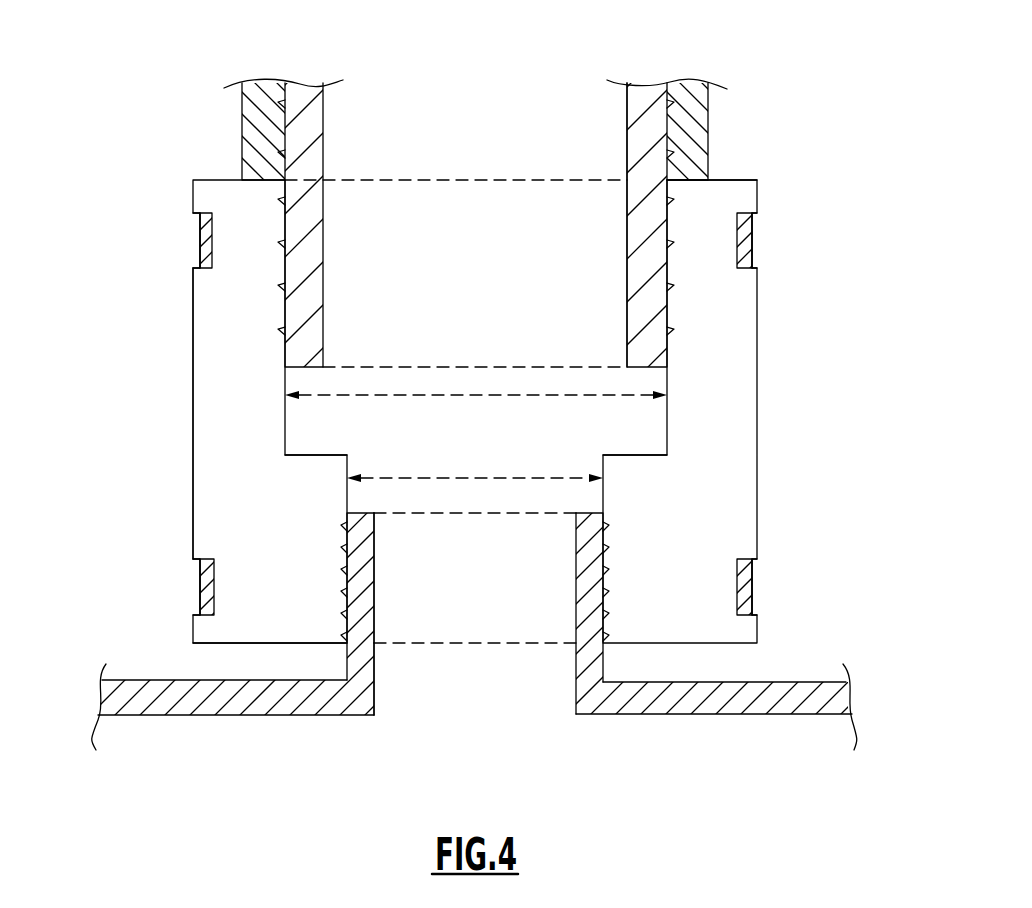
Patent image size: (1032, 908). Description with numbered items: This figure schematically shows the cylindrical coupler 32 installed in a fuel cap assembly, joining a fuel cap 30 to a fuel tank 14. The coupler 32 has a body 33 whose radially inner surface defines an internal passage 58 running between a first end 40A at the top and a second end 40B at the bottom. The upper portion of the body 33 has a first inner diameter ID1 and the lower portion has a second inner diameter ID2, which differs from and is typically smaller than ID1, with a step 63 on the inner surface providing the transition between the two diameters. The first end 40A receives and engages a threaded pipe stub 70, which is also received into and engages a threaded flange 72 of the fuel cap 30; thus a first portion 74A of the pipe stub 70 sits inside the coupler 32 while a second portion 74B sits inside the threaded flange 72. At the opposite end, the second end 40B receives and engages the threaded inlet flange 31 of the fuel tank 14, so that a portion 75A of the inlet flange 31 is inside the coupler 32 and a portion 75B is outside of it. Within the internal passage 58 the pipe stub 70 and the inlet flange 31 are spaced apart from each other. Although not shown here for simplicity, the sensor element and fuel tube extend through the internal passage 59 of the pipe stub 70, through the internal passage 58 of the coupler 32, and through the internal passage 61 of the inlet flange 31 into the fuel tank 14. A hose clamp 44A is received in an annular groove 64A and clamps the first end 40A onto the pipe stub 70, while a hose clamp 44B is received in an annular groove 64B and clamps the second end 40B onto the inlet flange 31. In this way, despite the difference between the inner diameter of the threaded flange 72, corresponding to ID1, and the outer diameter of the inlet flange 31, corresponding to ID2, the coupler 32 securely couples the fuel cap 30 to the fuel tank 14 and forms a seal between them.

The fuel tank 14 is at (138, 703).
The fuel cap 30 is at (210, 102).
The threaded inlet flange 31 is at (367, 617).
The cylindrical coupler 32 is at (163, 438).
The body 33 is at (210, 386).
The first end 40A is at (730, 194).
The second end 40B is at (233, 653).
The hose clamp 44A is at (200, 238).
The hose clamp 44B is at (200, 590).
The internal passage 58 is at (475, 443).
The internal passage 59 is at (478, 130).
The internal passage 61 is at (490, 738).
The step 63 is at (304, 471).
The annular groove 64A is at (224, 264).
The annular groove 64B is at (228, 583).
The threaded pipe stub 70 is at (313, 270).
The threaded flange 72 is at (268, 92).
The first portion 74A is at (603, 220).
The second portion 74B is at (603, 131).
The portion 75A is at (398, 550).
The portion 75B is at (398, 667).
The first inner diameter ID1 is at (370, 397).
The second inner diameter ID2 is at (518, 478).